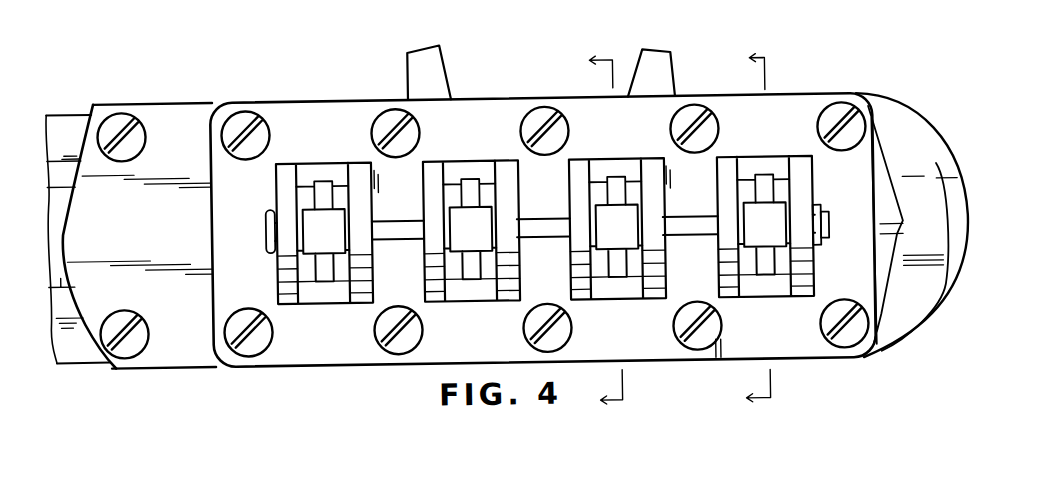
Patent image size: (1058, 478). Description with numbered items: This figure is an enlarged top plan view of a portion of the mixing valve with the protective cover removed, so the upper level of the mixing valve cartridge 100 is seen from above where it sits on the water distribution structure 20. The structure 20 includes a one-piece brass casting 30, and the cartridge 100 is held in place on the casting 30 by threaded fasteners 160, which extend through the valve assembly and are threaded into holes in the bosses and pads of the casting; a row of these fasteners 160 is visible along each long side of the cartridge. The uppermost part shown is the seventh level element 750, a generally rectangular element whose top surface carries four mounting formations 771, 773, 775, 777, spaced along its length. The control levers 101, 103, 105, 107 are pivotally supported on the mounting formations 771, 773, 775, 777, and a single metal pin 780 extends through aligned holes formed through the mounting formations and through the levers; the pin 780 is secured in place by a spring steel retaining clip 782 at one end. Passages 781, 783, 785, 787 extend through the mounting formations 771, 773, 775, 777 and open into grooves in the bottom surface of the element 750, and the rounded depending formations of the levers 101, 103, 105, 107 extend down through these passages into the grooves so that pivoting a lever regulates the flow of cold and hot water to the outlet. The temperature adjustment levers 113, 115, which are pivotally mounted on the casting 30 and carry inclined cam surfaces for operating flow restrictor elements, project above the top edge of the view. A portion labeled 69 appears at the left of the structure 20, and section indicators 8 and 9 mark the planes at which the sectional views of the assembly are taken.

The water distribution structure 20 is at (73, 103).
The one-piece brass casting 30 is at (921, 345).
The lower base portion 69 is at (62, 314).
The mixing valve cartridge 100 is at (210, 86).
The control lever 101 is at (783, 212).
The control lever 103 is at (636, 214).
The control lever 105 is at (487, 212).
The control lever 107 is at (340, 212).
The temperature adjustment lever 113 is at (658, 59).
The temperature adjustment lever 115 is at (435, 61).
The threaded fasteners 160 is at (118, 112).
The seventh level element 750 is at (790, 116).
The mounting formation 771 is at (728, 301).
The mounting formation 773 is at (582, 301).
The mounting formation 775 is at (436, 301).
The mounting formation 777 is at (290, 301).
The metal pin 780 is at (270, 233).
The passage 781 is at (748, 186).
The passage 783 is at (600, 188).
The passage 785 is at (453, 188).
The passage 787 is at (304, 190).
The spring steel retaining clip 782 is at (815, 248).
The section line 8- 8 is at (746, 231).
The section line 9- 9 is at (598, 231).